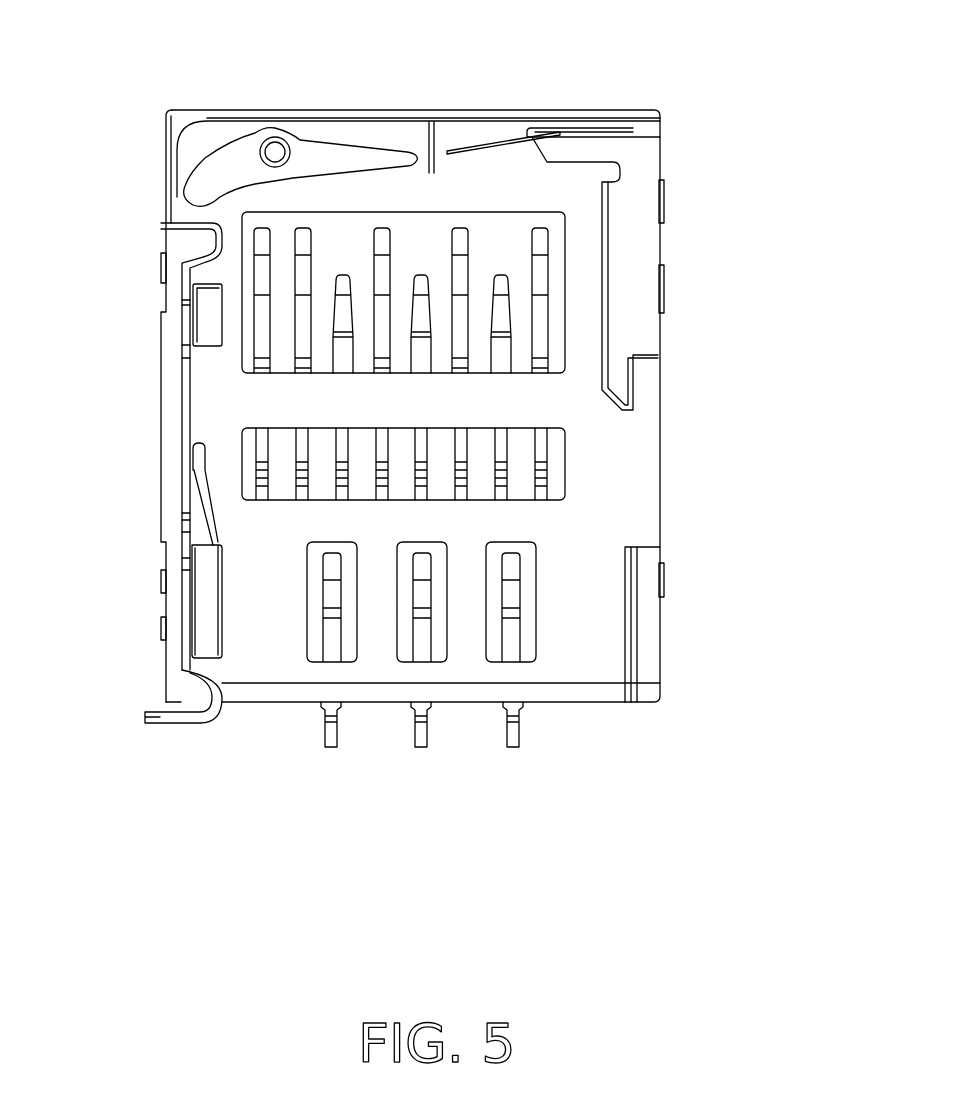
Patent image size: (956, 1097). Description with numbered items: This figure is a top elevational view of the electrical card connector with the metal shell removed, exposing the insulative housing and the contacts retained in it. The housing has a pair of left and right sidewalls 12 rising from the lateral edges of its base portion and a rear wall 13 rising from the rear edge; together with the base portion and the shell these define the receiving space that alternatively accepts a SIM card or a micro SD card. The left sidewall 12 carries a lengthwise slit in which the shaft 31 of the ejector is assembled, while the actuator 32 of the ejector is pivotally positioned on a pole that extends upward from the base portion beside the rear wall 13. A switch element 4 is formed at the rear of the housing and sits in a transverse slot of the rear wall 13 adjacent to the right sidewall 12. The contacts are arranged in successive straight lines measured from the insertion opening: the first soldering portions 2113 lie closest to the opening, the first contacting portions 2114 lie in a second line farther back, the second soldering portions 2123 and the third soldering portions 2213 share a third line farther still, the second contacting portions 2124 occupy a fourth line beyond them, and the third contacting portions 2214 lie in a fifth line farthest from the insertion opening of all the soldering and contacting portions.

The sidewall 12 is at (168, 387).
The rear wall 13 is at (423, 115).
The switch element 4 is at (495, 138).
The shaft 31 is at (187, 437).
The actuator 32 is at (340, 165).
The third contacting portions 2214 is at (265, 238).
The second contacting portions 2124 is at (340, 297).
The third soldering portions 2213 is at (268, 480).
The second soldering portions 2123 is at (346, 483).
The first contacting portions 2114 is at (331, 571).
The first soldering portions 2113 is at (332, 742).